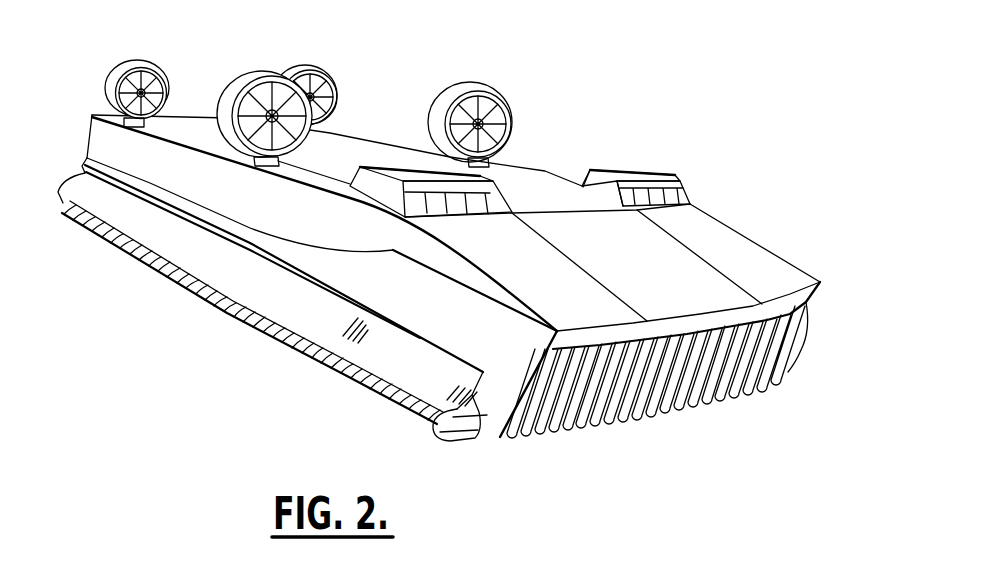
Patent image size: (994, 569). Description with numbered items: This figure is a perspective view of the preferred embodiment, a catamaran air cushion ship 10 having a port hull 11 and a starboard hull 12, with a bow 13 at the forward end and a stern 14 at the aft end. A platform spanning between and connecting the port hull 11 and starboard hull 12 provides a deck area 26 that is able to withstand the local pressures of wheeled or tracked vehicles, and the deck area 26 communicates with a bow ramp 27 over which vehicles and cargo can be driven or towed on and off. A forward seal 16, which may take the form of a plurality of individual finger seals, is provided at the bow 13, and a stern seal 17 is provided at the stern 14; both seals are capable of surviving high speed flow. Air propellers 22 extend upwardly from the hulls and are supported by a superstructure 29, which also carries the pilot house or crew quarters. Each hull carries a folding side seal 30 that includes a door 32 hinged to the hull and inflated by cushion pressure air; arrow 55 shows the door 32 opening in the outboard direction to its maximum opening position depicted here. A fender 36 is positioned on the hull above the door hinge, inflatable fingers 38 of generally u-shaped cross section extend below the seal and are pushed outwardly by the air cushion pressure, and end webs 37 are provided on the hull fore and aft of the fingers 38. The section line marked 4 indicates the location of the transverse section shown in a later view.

The catamaran air cushion ship 10 is at (436, 258).
The port hull 11 is at (85, 160).
The starboard hull 12 is at (806, 322).
The bow 13 is at (688, 318).
The stern 14 is at (91, 127).
The forward seal 16 is at (668, 412).
The stern seal 17 is at (66, 177).
The air propellers 22 is at (156, 80).
The deck area 26 is at (352, 156).
The bow ramp 27 is at (648, 240).
The superstructure 29 is at (543, 166).
The folding side seal 30 is at (266, 352).
The door 32 is at (195, 256).
The fender 36 is at (378, 318).
The end webs 37 is at (476, 405).
The inflatable fingers 38 is at (357, 399).
The arrow 55 is at (473, 424).
The section line 4- 4 is at (403, 318).